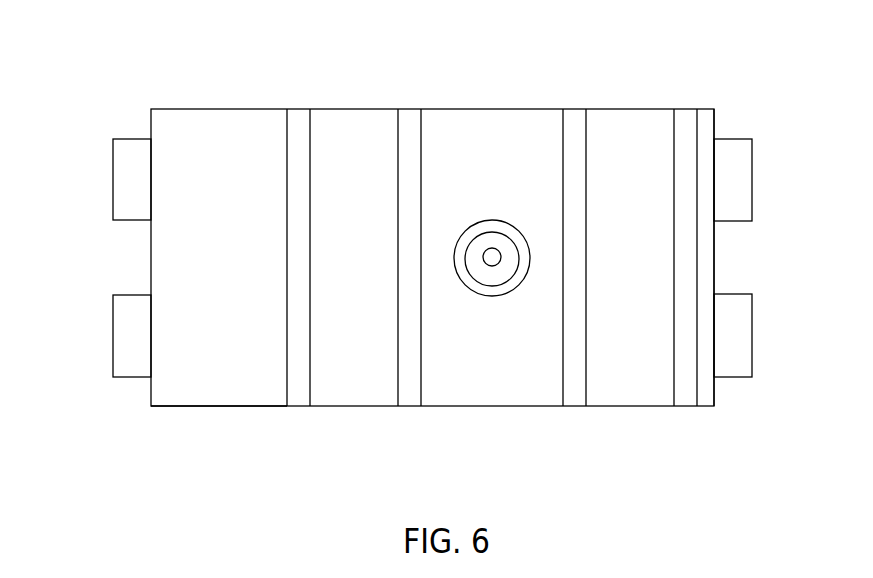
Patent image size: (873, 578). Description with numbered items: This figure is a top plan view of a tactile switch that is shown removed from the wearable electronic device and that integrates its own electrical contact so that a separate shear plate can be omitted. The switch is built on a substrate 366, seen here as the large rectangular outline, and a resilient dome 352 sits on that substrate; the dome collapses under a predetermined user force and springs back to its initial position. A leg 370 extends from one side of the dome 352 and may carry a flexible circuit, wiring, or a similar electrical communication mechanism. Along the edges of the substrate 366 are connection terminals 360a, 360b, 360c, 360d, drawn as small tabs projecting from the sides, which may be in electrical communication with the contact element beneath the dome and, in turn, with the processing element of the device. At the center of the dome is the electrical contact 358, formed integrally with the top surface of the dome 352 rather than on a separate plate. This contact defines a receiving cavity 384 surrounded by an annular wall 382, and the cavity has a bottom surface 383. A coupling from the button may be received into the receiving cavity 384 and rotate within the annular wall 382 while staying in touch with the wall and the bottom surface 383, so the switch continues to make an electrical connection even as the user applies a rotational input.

The dome 352 is at (501, 122).
The electrical contact 358 is at (478, 289).
The connection terminal 360a is at (738, 317).
The connection terminal 360b is at (738, 152).
The mounting tab 360c is at (112, 177).
The connection terminal 360d is at (112, 352).
The substrate 366 is at (703, 117).
The leg 370 is at (233, 386).
The annular wall 382 is at (502, 296).
The bottom surface 383 is at (491, 252).
The receiving cavity 384 is at (506, 242).